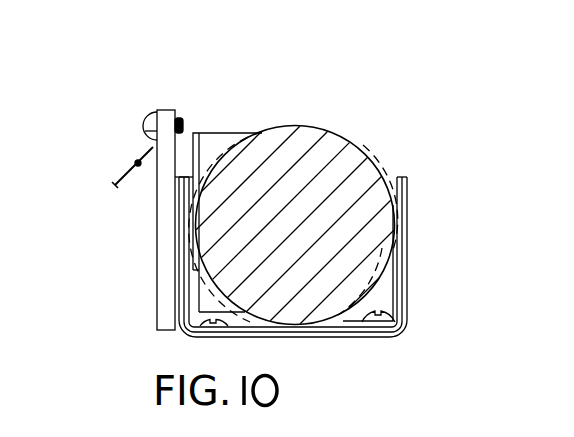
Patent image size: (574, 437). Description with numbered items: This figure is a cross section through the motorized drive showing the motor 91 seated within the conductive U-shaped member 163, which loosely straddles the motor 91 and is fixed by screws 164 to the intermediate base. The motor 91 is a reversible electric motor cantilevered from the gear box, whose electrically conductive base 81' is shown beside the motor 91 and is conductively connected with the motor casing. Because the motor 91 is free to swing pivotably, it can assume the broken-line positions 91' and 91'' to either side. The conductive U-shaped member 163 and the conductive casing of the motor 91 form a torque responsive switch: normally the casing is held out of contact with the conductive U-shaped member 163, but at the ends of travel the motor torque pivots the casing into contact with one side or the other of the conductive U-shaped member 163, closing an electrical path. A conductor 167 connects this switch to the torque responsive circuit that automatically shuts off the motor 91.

The base of the gear box 81' is at (141, 222).
The motor 91 is at (295, 206).
The pivoted motor position 91' is at (225, 207).
The pivoted motor position 91'' is at (380, 208).
The conductive U-shaped member 163 is at (408, 193).
The screws 164 is at (219, 322).
The conductor 167 is at (349, 321).